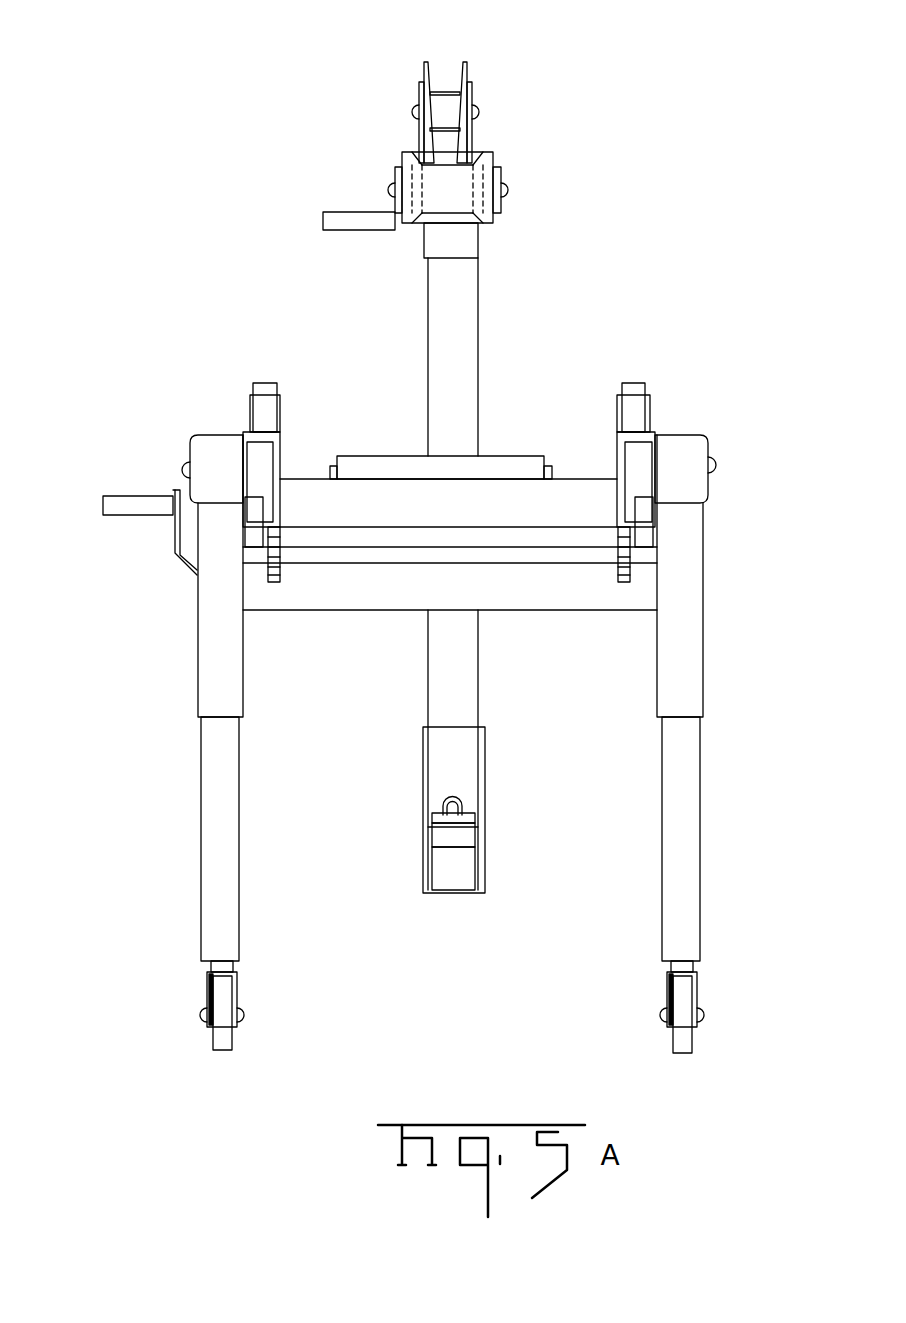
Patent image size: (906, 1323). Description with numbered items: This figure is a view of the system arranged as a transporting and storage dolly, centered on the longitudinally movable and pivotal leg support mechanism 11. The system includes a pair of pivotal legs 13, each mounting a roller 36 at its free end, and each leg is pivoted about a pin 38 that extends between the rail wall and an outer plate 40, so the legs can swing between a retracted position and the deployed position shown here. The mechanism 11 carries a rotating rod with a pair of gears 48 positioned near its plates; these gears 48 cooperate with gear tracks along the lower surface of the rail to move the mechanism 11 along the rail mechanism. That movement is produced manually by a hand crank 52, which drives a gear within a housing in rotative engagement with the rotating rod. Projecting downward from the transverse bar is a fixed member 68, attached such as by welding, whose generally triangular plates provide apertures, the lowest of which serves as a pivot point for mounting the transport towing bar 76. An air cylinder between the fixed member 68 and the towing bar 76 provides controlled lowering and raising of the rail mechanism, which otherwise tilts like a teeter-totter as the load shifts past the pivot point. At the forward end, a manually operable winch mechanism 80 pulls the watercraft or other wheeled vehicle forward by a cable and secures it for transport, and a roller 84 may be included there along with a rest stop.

The leg support mechanism 11 is at (410, 822).
The pivotal legs 13 is at (188, 623).
The roller 36 is at (215, 1052).
The pin 38 is at (713, 466).
The outer plate 40 is at (186, 466).
The gears 48 is at (275, 585).
The hand crank 52 is at (137, 502).
The fixed member 68 is at (478, 675).
The transport towing bar 76 is at (460, 895).
The winch mechanism 80 is at (518, 165).
The roller 84 is at (457, 203).